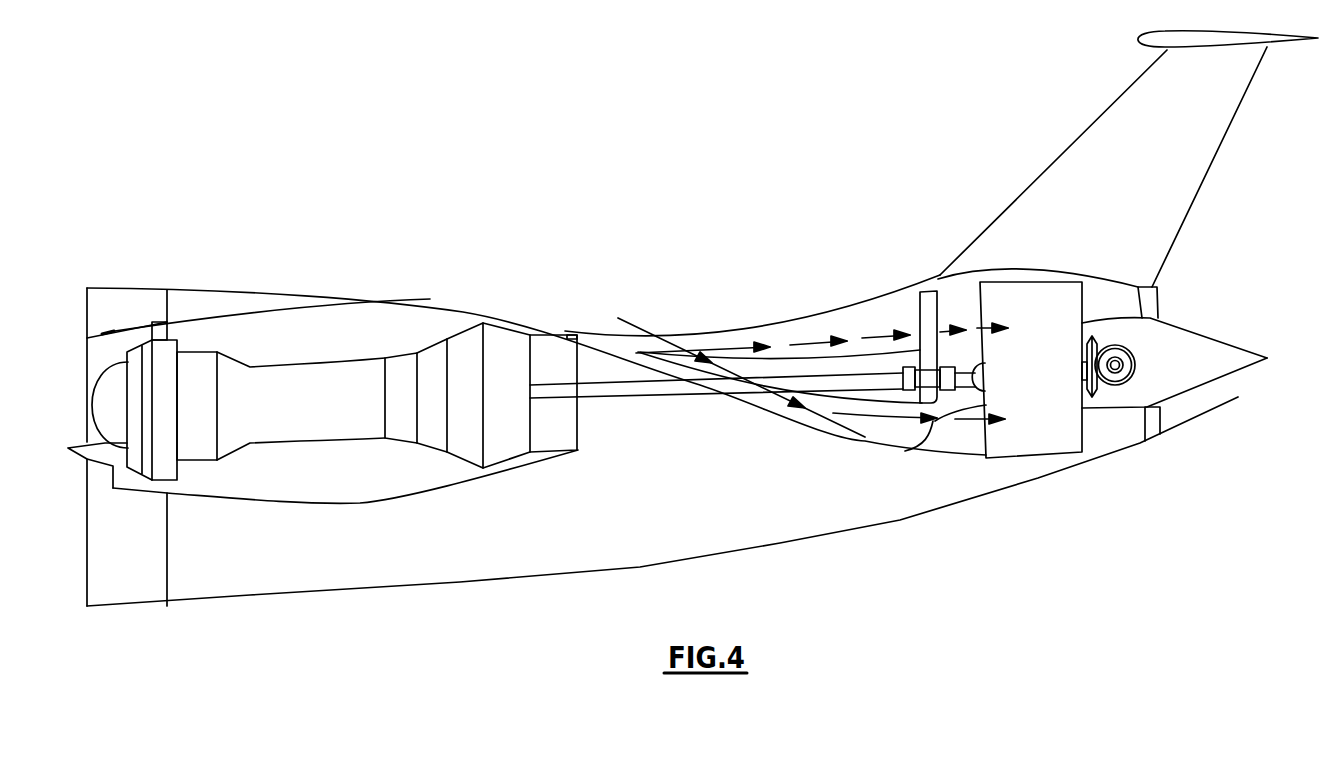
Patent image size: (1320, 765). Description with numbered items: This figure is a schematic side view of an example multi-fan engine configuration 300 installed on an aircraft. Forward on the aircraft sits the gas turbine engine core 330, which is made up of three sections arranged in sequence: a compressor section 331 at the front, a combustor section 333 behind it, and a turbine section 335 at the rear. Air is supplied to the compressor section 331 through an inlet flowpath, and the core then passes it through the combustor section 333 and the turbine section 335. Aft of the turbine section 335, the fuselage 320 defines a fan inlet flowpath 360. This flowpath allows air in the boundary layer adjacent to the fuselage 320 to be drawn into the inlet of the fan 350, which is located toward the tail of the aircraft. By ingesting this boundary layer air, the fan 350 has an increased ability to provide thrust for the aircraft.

The multi-fan engine configuration 300 is at (545, 126).
The fuselage 320 is at (753, 545).
The gas turbine engine core 330 is at (497, 393).
The compressor section 331 is at (173, 327).
The combustor section 333 is at (388, 331).
The turbine section 335 is at (528, 318).
The fan 350 is at (1007, 297).
The fan inlet flowpath 360 is at (662, 338).